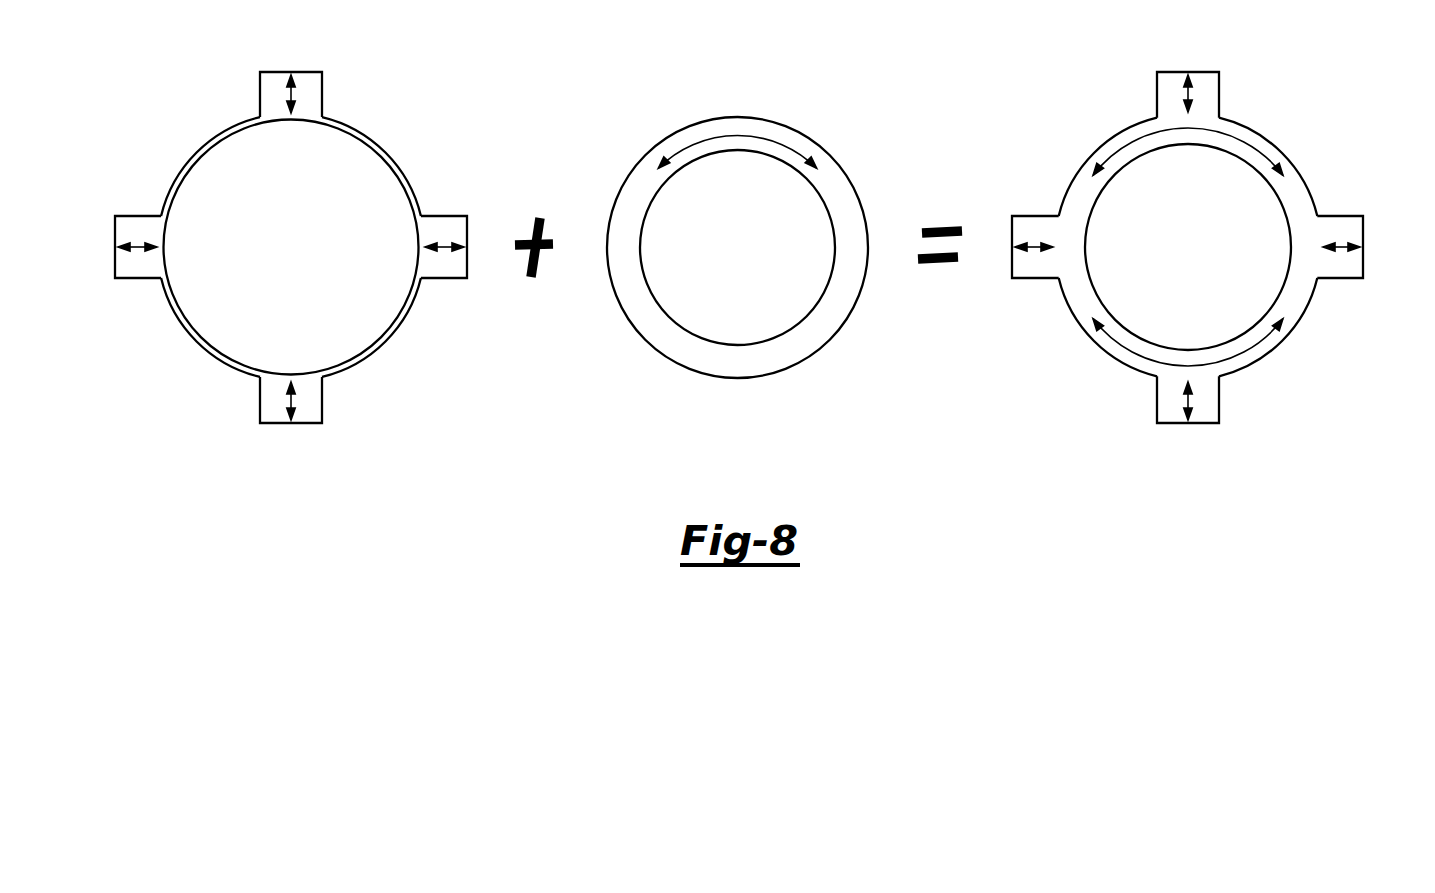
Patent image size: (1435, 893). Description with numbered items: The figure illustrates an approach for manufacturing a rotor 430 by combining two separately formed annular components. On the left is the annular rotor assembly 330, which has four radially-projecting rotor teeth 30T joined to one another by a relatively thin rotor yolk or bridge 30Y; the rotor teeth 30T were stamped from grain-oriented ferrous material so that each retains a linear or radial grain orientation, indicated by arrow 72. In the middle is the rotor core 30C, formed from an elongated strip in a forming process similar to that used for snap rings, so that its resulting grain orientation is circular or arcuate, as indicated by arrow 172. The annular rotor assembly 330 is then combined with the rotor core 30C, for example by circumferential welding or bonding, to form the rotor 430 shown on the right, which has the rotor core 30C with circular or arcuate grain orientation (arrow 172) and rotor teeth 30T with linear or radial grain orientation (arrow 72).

The annular rotor assembly 330 is at (345, 212).
The rotor teeth 30T is at (260, 93).
The linear grain orientation arrow 72 is at (293, 93).
The rotor yolk 30Y is at (205, 150).
The rotor core 30C is at (865, 112).
The circular grain orientation arrow 172 is at (737, 135).
The rotor 430 is at (1350, 85).